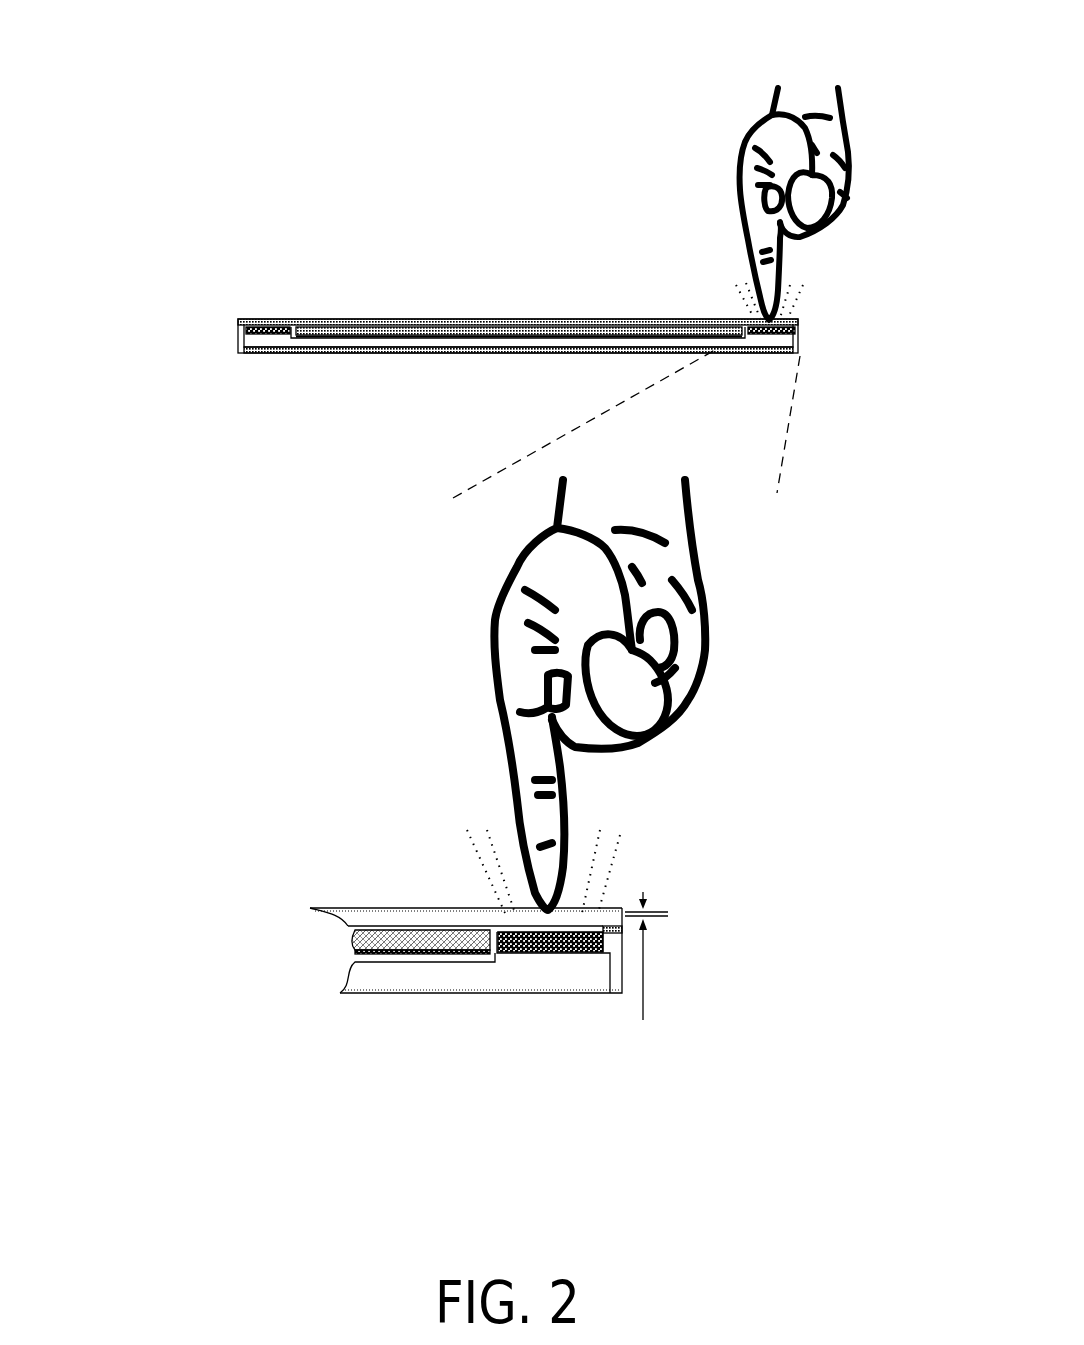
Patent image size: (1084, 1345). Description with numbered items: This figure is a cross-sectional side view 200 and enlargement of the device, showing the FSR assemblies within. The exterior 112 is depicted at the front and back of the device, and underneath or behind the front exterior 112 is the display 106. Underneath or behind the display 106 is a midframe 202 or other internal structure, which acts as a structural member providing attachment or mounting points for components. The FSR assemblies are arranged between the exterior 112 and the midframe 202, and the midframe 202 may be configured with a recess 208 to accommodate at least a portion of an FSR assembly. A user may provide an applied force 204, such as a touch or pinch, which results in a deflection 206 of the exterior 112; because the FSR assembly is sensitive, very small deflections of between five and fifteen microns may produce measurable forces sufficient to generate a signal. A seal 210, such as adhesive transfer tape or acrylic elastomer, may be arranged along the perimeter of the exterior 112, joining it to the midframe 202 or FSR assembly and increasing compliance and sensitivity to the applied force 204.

The cross-sectional side view 200 is at (782, 44).
The display 106 is at (400, 940).
The exterior 112 is at (410, 920).
The midframe 202 is at (688, 1150).
The applied force 204 is at (576, 890).
The deflection 206 is at (651, 1025).
The recess 208 is at (490, 935).
The seal 210 is at (614, 912).